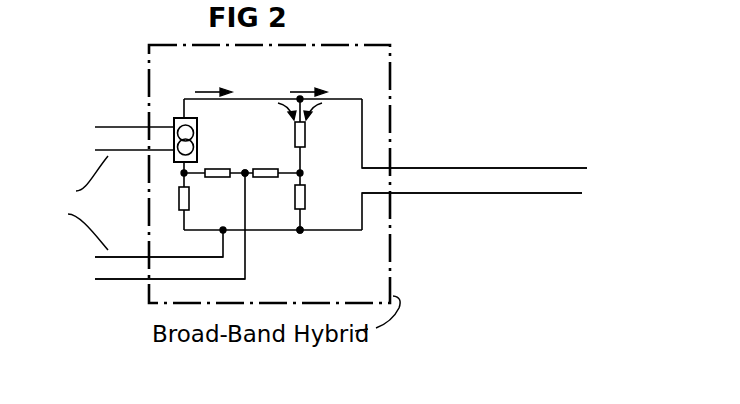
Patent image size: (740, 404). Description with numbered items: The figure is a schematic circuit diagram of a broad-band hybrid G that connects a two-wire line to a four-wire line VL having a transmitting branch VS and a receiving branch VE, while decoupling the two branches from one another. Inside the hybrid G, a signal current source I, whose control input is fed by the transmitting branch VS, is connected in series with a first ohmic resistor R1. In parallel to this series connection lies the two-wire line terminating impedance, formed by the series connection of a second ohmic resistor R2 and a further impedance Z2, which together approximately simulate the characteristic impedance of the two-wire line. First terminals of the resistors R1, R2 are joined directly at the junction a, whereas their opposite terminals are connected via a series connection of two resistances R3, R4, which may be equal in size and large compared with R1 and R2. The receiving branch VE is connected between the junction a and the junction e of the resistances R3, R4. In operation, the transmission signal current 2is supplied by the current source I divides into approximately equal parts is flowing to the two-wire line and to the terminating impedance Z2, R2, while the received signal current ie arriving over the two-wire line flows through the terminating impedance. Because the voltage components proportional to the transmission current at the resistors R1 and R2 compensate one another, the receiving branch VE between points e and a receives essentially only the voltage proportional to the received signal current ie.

The hybrid G is at (355, 283).
The signal current source I is at (190, 140).
The first ohmic resistor R1 is at (200, 200).
The second ohmic resistor R2 is at (317, 198).
The resistance R3 is at (221, 160).
The resistance R4 is at (266, 160).
The further impedance Z2 is at (317, 144).
The junction e is at (242, 160).
The junction a is at (303, 244).
The transmission signal current 2is is at (212, 78).
The transmission signal current part is is at (296, 98).
The received signal current ie is at (320, 119).
The transmitting branch VS is at (120, 140).
The receiving branch VE is at (153, 271).
The four-wire line VL is at (80, 203).